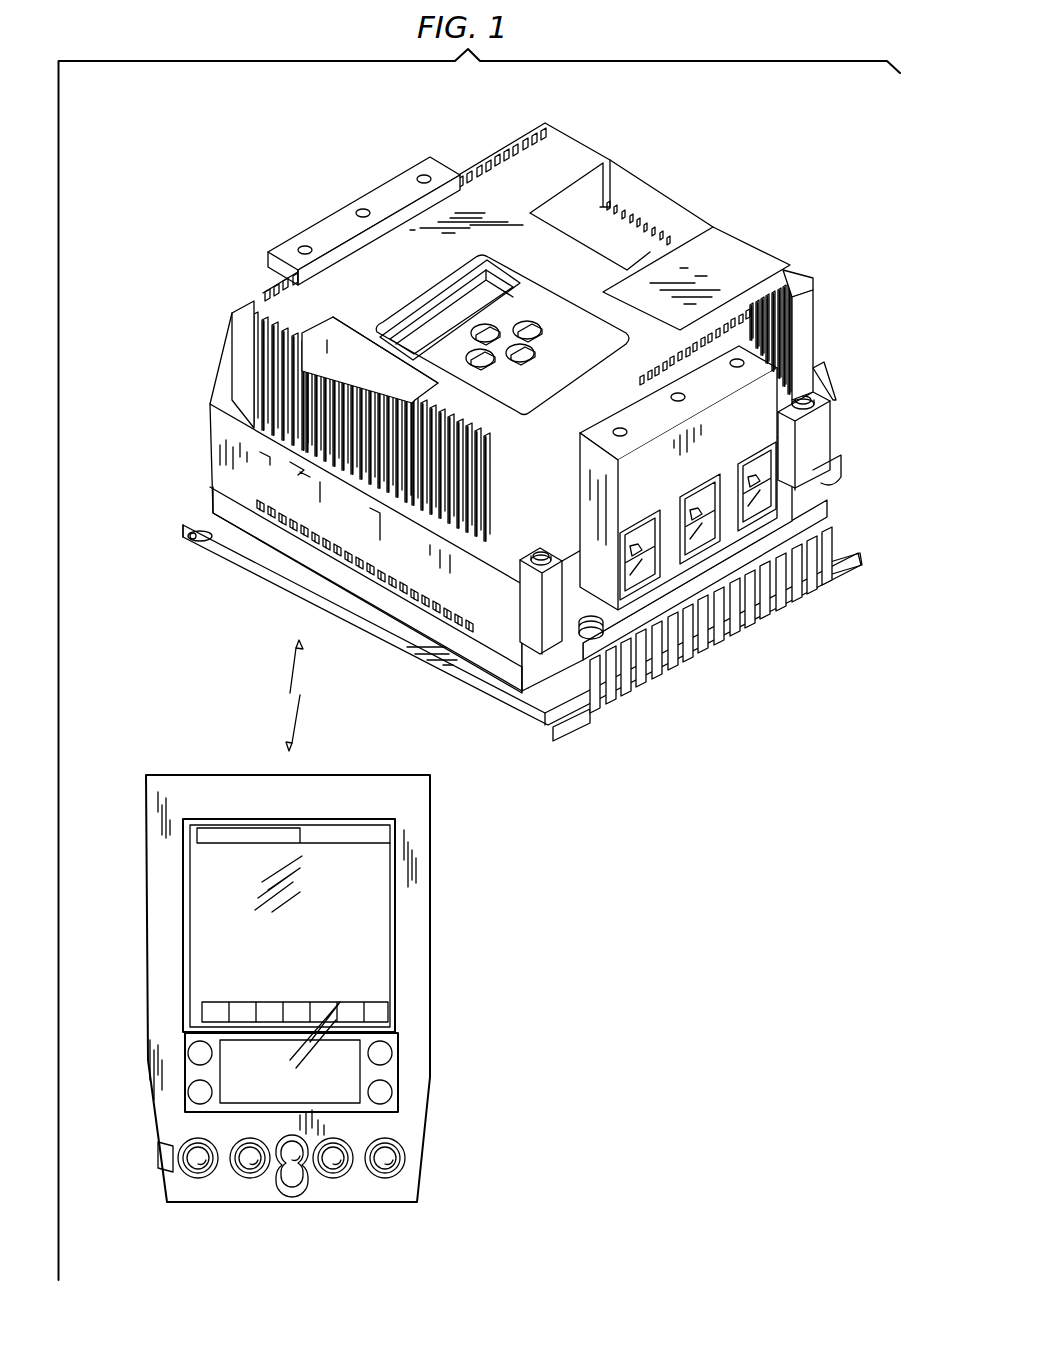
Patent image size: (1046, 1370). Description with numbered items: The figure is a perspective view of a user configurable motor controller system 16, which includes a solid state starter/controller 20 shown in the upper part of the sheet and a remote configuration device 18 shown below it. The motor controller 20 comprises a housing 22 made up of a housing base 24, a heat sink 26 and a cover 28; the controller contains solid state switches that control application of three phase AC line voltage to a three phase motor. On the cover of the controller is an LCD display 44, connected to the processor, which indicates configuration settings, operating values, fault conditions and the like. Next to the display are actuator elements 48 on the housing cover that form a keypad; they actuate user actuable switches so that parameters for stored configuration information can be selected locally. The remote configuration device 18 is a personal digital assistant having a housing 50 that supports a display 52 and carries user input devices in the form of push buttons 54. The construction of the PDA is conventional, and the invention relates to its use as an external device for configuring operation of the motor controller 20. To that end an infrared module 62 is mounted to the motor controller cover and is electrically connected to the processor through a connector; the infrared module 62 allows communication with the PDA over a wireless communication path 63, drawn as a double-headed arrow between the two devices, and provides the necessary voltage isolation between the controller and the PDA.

The user configurable motor controller system 16 is at (185, 300).
The remote configuration device 18 is at (176, 757).
The solid state starter/controller 20 is at (470, 135).
The housing 22 is at (564, 131).
The housing base 24 is at (210, 454).
The heat sink 26 is at (213, 512).
The cover 28 is at (232, 356).
The LCD display 44 is at (452, 315).
The actuator elements 48 is at (472, 356).
The housing 50 is at (432, 1039).
The display 52 is at (373, 943).
The push buttons 54 is at (418, 1180).
The infrared module 62 is at (362, 355).
The wireless communication path 63 is at (290, 693).